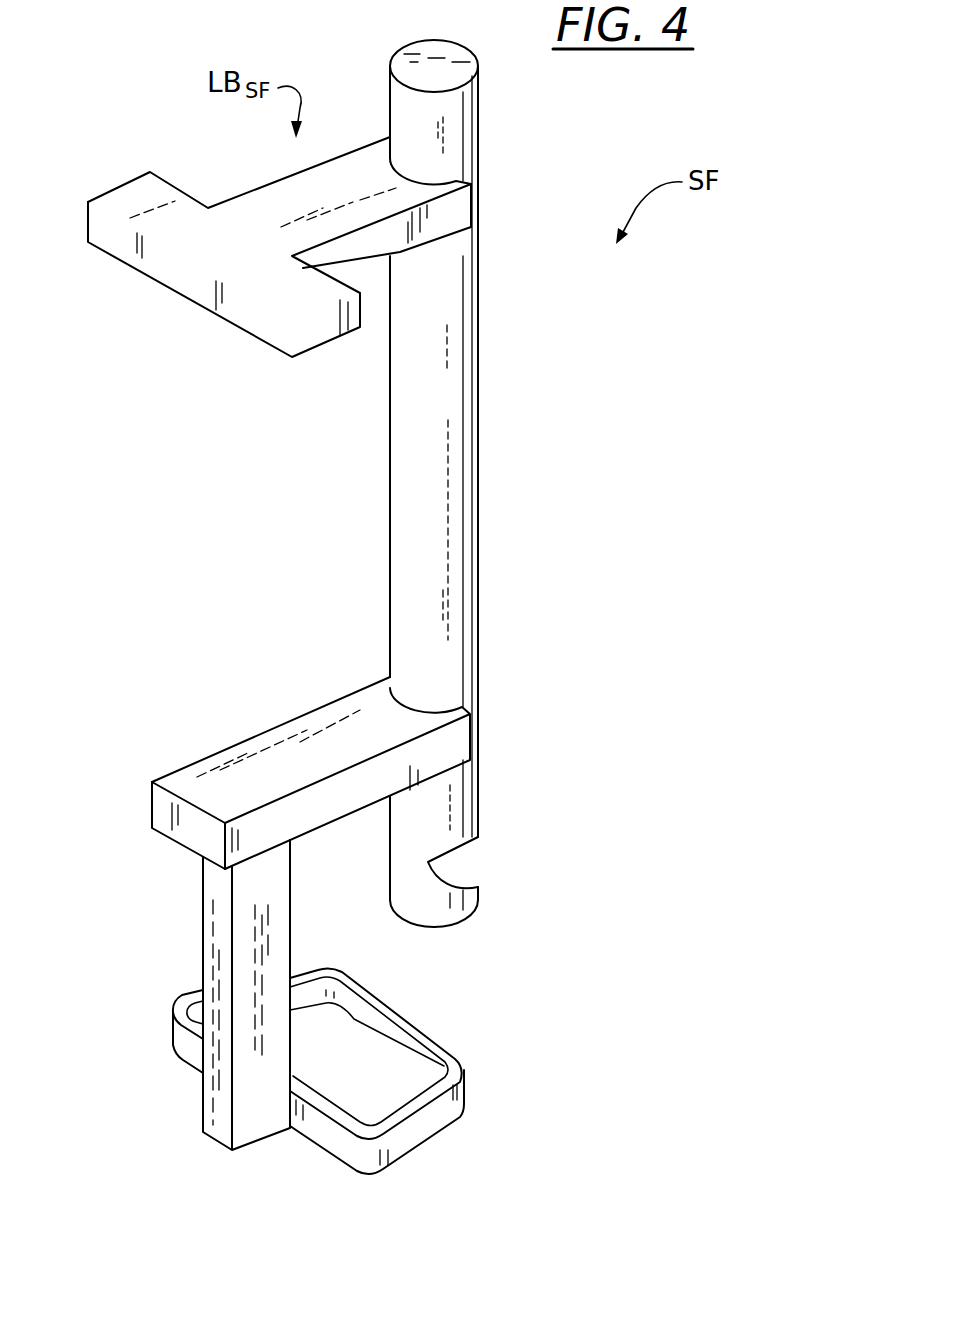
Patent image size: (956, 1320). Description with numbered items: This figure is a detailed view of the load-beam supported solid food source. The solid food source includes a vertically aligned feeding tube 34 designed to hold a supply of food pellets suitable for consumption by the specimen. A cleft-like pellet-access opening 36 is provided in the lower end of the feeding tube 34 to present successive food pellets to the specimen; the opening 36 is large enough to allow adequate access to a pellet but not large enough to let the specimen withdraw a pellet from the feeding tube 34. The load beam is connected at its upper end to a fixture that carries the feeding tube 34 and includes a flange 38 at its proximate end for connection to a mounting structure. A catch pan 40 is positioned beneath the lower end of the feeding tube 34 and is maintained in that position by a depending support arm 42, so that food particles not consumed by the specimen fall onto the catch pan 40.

The feeding tube 34 is at (480, 507).
The pellet-access opening 36 is at (492, 862).
The flange 38 is at (122, 262).
The catch pan 40 is at (438, 1127).
The support arm 42 is at (212, 922).